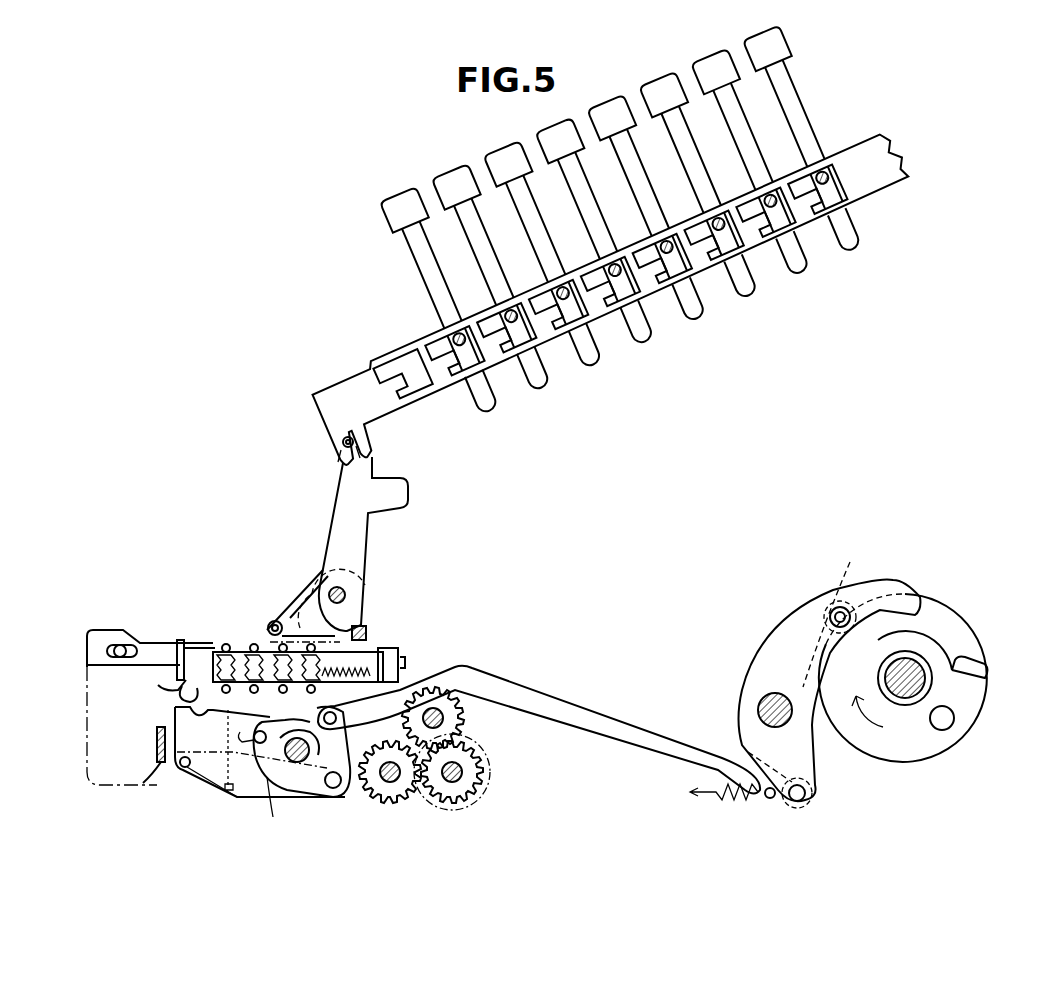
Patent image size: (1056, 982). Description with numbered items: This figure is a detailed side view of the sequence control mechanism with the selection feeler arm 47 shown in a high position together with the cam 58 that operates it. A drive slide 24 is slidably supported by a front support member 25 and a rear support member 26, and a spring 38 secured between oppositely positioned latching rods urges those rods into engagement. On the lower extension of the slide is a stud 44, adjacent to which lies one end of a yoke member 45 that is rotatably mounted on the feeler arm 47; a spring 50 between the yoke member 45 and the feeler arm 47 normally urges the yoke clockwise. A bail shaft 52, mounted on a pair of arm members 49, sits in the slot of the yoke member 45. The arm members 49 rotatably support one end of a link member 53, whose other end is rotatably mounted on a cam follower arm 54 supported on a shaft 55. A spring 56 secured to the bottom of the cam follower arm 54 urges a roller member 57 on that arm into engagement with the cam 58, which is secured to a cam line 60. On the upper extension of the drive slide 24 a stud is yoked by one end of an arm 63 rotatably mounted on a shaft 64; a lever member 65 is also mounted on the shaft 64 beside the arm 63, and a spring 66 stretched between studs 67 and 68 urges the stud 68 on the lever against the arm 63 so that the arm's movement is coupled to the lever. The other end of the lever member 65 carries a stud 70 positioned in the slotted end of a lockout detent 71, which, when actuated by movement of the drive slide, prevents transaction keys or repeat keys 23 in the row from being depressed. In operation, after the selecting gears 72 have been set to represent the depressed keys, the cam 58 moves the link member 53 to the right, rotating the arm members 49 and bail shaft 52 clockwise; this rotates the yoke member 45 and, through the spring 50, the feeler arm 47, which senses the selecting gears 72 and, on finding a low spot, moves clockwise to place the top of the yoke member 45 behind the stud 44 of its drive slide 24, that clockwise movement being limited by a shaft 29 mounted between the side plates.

The repeat keys 23 is at (805, 117).
The drive slide 24 is at (160, 650).
The front support member 25 is at (158, 685).
The rear support member 26 is at (387, 652).
The shaft 29 is at (312, 792).
The spring 38 is at (214, 650).
The stud 44 is at (178, 697).
The yoke member 45 is at (192, 783).
The selection feeler arm 47 is at (239, 797).
The arm members 49 is at (268, 809).
The spring 50 is at (225, 740).
The bail shaft 52 is at (297, 742).
The link member 53 is at (507, 675).
The cam follower arm 54 is at (808, 767).
The shaft 55 is at (765, 703).
The spring 56 is at (724, 800).
The roller member 57 is at (845, 606).
The cam 58 is at (975, 705).
The cam line 60 is at (905, 698).
The arm 63 is at (308, 590).
The shaft 64 is at (346, 596).
The lever member 65 is at (348, 553).
The spring 66 is at (300, 622).
The stud 67 is at (268, 624).
The stud 68 is at (364, 626).
The stud 70 is at (343, 442).
The lockout detent 71 is at (381, 400).
The selecting gears 72 is at (470, 716).